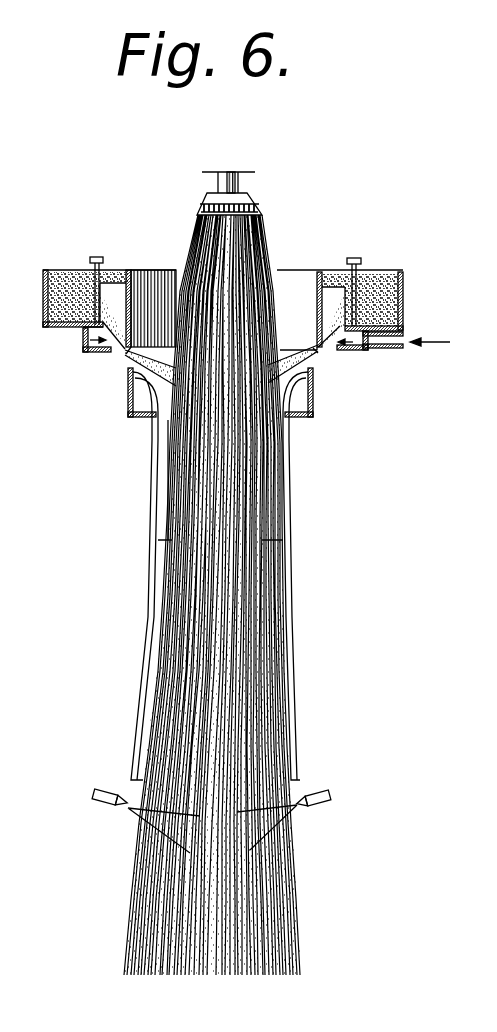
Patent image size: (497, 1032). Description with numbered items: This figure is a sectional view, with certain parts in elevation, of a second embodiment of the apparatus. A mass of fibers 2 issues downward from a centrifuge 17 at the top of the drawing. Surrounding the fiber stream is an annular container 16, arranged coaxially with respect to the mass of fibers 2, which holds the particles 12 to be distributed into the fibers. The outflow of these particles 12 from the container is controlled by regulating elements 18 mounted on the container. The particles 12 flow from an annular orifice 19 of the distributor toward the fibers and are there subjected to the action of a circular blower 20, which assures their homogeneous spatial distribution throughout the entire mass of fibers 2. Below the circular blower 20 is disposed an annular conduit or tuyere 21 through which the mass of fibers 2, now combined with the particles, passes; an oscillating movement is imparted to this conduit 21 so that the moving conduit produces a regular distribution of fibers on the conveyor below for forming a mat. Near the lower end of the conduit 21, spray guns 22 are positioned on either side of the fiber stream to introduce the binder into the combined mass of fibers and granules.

The mass of fibers 2 is at (264, 262).
The particles 12 is at (400, 308).
The annular container 16 is at (403, 293).
The centrifuge 17 is at (259, 206).
The regulating elements 18 is at (93, 257).
The annular orifice 19 is at (119, 357).
The circular blower 20 is at (355, 350).
The annular conduit or tuyere 21 is at (283, 540).
The spray guns 22 is at (90, 794).